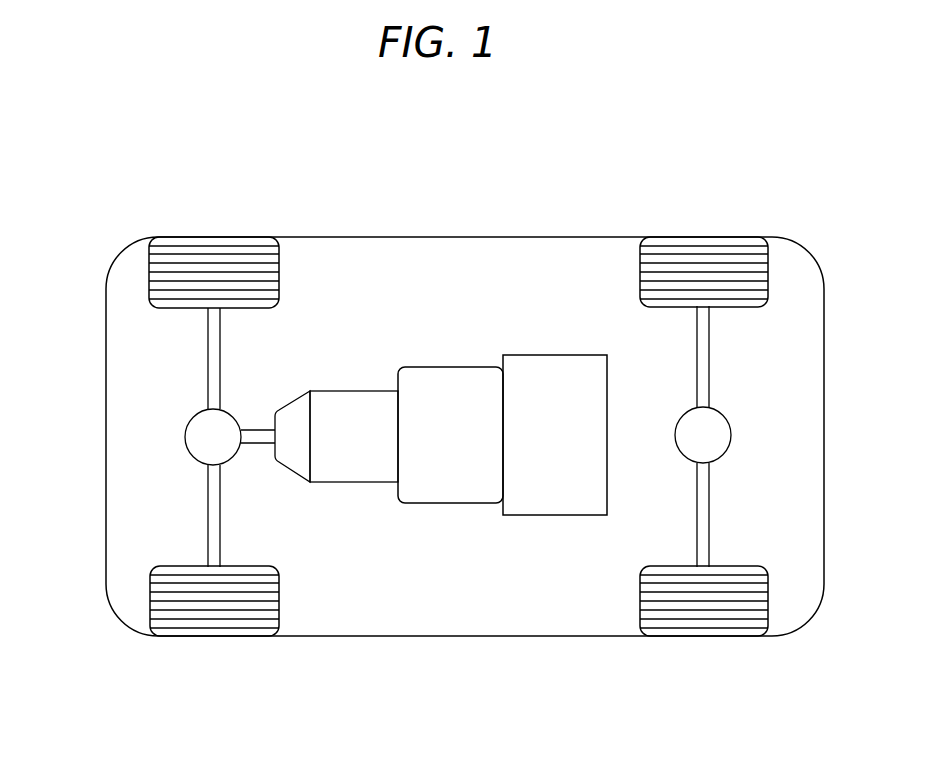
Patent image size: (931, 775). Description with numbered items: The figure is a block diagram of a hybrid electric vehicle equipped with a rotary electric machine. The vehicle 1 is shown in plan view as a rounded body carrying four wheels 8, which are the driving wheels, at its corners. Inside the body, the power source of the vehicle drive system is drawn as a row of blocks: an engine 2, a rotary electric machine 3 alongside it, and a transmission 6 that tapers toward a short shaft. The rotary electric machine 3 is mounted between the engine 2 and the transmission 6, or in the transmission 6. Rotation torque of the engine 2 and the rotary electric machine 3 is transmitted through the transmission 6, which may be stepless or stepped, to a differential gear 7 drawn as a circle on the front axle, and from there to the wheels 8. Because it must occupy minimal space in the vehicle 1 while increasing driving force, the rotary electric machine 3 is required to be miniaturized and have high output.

The vehicle 1 is at (578, 196).
The engine 2 is at (550, 465).
The rotary electric machine 3 is at (451, 465).
The transmission 6 is at (357, 464).
The differential gear 7 is at (192, 452).
The wheels 8 is at (228, 257).